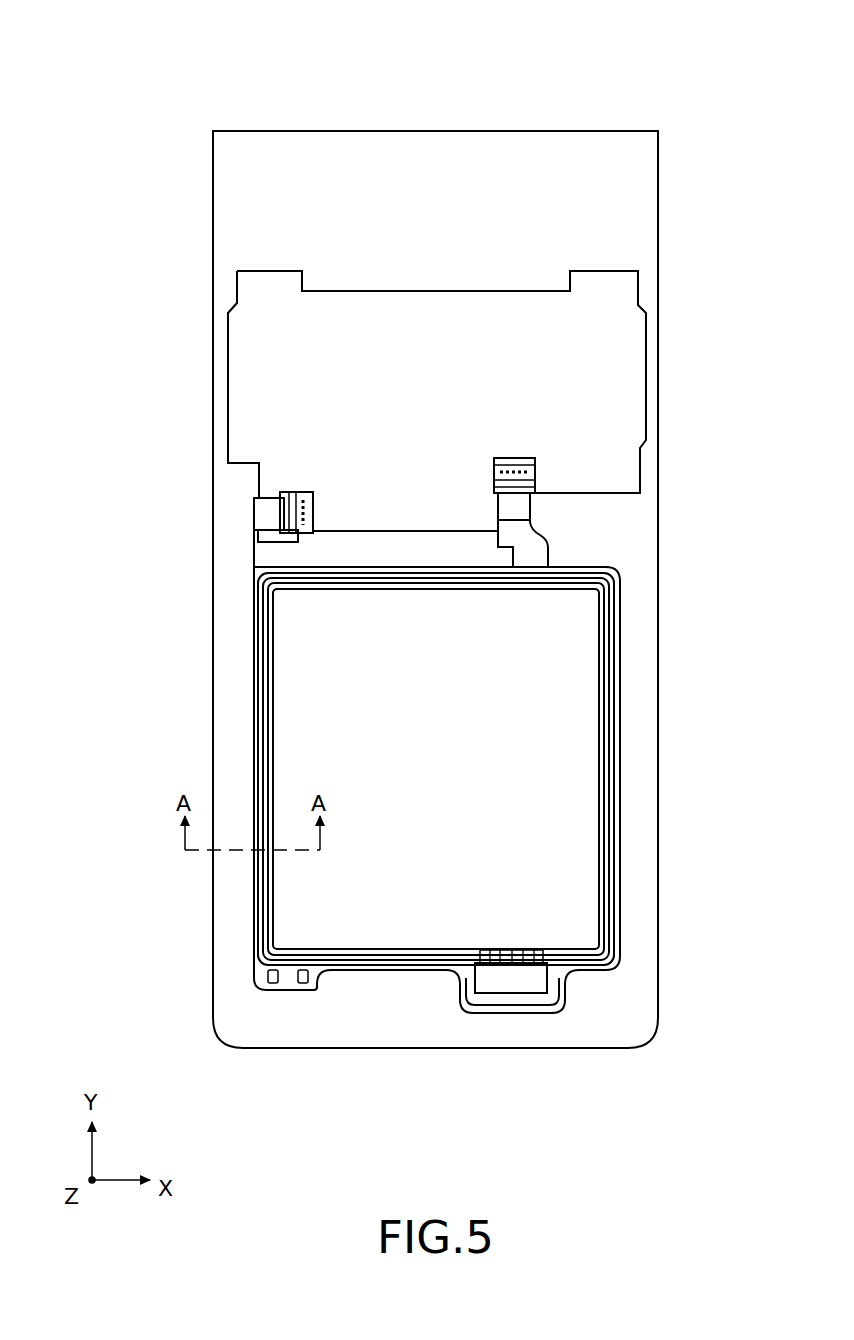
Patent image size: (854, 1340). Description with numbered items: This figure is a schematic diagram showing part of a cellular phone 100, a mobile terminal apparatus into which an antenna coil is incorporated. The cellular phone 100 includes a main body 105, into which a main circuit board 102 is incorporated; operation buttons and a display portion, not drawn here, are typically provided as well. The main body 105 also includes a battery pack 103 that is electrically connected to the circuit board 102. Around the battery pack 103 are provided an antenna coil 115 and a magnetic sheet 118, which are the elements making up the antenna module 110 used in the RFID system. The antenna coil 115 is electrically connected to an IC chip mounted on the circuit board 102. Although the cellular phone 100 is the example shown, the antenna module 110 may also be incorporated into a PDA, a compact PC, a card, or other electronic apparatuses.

The cellular phone 100 is at (482, 529).
The main body 105 is at (662, 214).
The main circuit board 102 is at (625, 377).
The battery pack 103 is at (568, 722).
The antenna module 110 is at (624, 805).
The antenna coil 115 is at (494, 769).
The magnetic sheet 118 is at (609, 665).